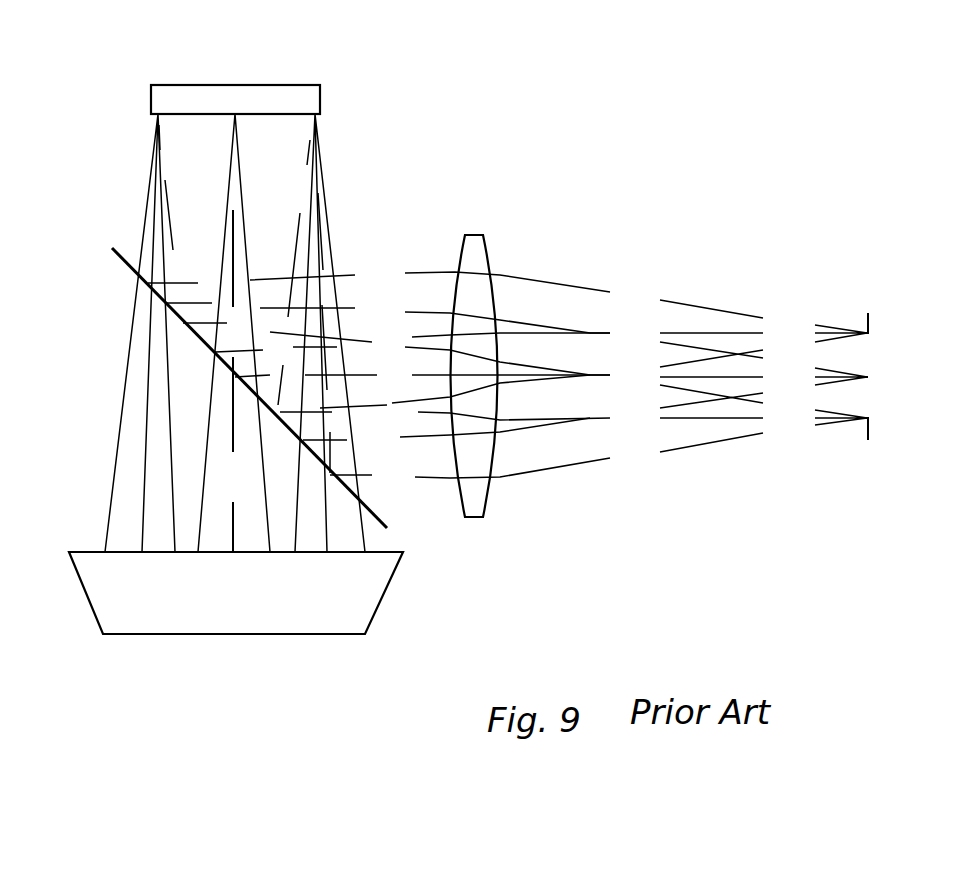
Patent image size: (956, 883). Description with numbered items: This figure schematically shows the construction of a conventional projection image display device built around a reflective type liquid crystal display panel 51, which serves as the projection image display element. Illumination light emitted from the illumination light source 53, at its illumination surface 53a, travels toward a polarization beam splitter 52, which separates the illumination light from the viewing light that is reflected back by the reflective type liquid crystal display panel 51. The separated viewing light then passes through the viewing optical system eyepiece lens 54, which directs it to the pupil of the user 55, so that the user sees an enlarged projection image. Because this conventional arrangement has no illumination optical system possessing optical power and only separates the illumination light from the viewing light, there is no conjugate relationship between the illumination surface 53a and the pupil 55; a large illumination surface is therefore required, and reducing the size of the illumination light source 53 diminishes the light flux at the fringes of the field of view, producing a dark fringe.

The reflective-type liquid crystal display panel 51 is at (285, 96).
The polarization beam splitter 52 is at (112, 247).
The illumination light source 53 is at (245, 618).
The illumination surface 53a is at (86, 548).
The viewing optical system eyepiece lens 54 is at (474, 505).
The pupil of the user 55 is at (867, 440).